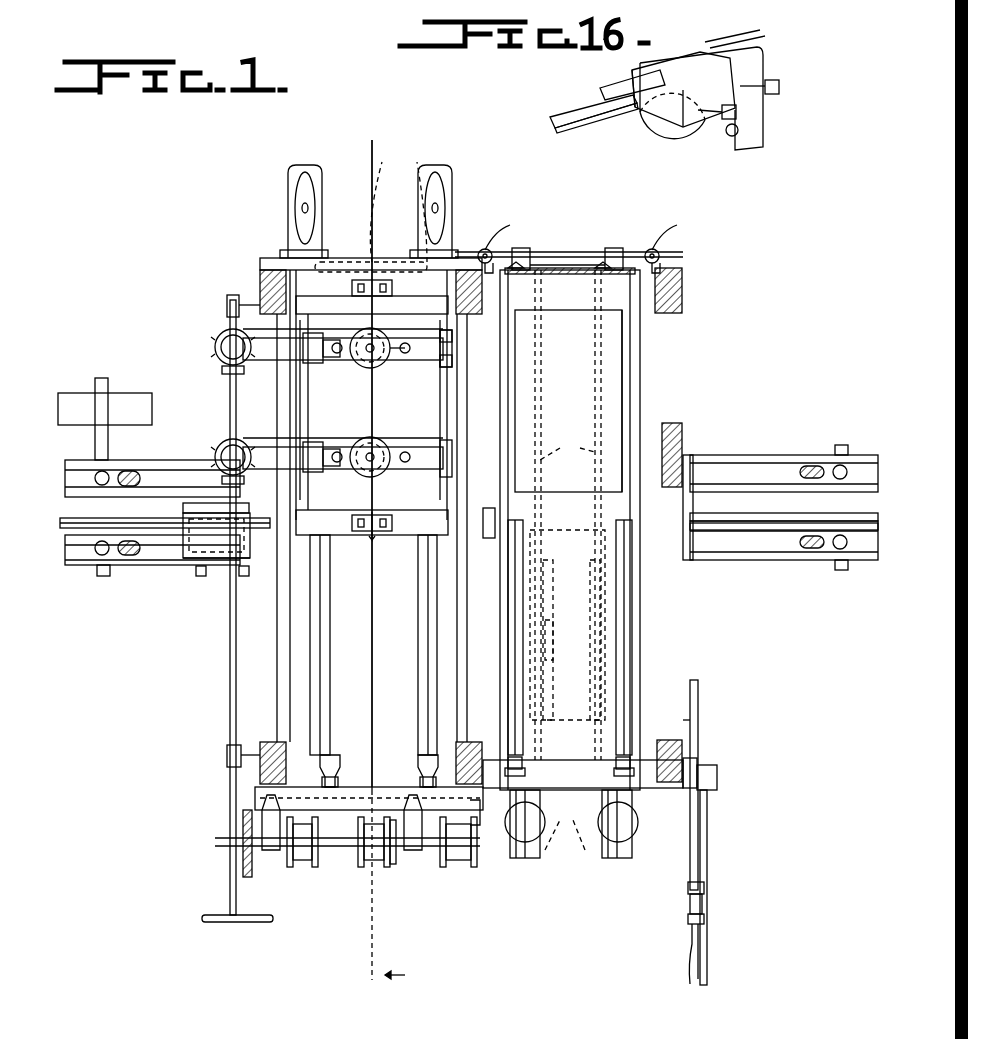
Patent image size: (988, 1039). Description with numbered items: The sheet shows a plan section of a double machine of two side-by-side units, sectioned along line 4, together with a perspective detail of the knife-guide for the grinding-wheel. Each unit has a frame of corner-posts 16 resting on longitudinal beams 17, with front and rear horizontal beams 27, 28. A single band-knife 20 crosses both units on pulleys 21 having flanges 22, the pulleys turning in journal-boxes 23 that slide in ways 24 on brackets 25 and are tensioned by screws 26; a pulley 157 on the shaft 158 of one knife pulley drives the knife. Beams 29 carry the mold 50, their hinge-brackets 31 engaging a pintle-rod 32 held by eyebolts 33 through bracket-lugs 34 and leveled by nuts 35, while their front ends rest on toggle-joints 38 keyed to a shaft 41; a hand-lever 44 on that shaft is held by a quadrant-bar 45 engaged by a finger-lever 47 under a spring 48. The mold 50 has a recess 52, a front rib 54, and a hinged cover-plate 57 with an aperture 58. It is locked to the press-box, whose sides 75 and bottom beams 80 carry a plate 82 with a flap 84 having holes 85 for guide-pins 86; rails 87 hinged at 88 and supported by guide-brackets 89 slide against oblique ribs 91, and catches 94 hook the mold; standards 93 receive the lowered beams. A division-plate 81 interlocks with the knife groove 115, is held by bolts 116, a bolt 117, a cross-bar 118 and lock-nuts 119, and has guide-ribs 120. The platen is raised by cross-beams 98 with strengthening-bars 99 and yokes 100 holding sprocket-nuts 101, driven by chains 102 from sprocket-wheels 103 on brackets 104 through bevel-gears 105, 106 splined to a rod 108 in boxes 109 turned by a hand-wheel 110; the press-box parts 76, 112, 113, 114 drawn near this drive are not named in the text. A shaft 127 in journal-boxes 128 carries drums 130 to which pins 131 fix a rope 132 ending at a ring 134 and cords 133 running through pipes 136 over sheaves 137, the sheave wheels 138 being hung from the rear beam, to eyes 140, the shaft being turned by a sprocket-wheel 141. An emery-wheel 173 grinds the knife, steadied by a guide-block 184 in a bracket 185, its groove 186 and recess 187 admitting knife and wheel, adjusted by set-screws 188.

In FIG. 1, the section line 4 is at (384, 562).
In FIG. 1, the corner-post 16 is at (260, 290).
In FIG. 1, the horizontal longitudinal beam 17 is at (698, 686).
In FIG. 1, the band-knife 20 is at (752, 470).
In FIG. 16, the band-knife 20 is at (550, 120).
In FIG. 1, the pulley 21 is at (165, 465).
In FIG. 1, the flange 22 is at (160, 567).
In FIG. 1, the journal-box 23 is at (95, 472).
In FIG. 1, the longitudinal way 24 is at (110, 470).
In FIG. 1, the bracket 25 is at (165, 462).
In FIG. 1, the screw 26 is at (128, 486).
In FIG. 1, the horizontal beam 27 is at (486, 811).
In FIG. 1, the horizontal beam 28 is at (380, 262).
In FIG. 1, the longitudinal beam 29 is at (518, 860).
In FIG. 1, the hinge-bracket 31 is at (525, 248).
In FIG. 1, the pintle-rod 32 is at (570, 262).
In FIG. 1, the eyebolt 33 is at (485, 249).
In FIG. 1, the bracket-lug 34 is at (492, 250).
In FIG. 1, the nut 35 is at (593, 211).
In FIG. 1, the toggle-joint 38 is at (575, 788).
In FIG. 1, the transverse shaft 41 is at (717, 780).
In FIG. 1, the hand-lever 44 is at (707, 870).
In FIG. 1, the notched quadrant-bar 45 is at (698, 722).
In FIG. 1, the finger-lever 47 is at (690, 965).
In FIG. 1, the spring 48 is at (690, 905).
In FIG. 1, the mold 50 is at (640, 390).
In FIG. 1, the rectangular recess 52 is at (568, 401).
In FIG. 1, the downwardly-projecting rib 54 is at (485, 540).
In FIG. 1, the cover-plate 57 is at (630, 360).
In FIG. 1, the central rectangular aperture 58 is at (622, 412).
In FIG. 1, the side 75 is at (308, 407).
In FIG. 1, the cross bar 76 is at (348, 300).
In FIG. 1, the beam 80 is at (343, 300).
In FIG. 1, the division-plate 81 is at (475, 663).
In FIG. 1, the plate 82 is at (580, 275).
In FIG. 1, the flap 84 is at (605, 248).
In FIG. 1, the hole 85 is at (564, 515).
In FIG. 1, the guide-pin 86 is at (625, 248).
In FIG. 1, the rail 87 is at (567, 447).
In FIG. 1, the hinge 88 is at (600, 272).
In FIG. 1, the guide-bracket 89 is at (595, 668).
In FIG. 1, the oblique rib 91 is at (522, 858).
In FIG. 1, the tubular standard 93 is at (566, 847).
In FIG. 1, the catch 94 is at (600, 536).
In FIG. 1, the cross-beam 98 is at (392, 360).
In FIG. 1, the steel strengthening-bar 99 is at (464, 428).
In FIG. 1, the steel yoke 100 is at (364, 402).
In FIG. 1, the sprocket-nut 101 is at (372, 368).
In FIG. 1, the sprocket-chain 102 is at (230, 380).
In FIG. 1, the sprocket-wheel 103 is at (222, 333).
In FIG. 1, the laterally-projecting bracket 104 is at (250, 366).
In FIG. 1, the bevel-gear 105 is at (215, 345).
In FIG. 1, the vertical bevel-gear 106 is at (222, 368).
In FIG. 1, the longitudinal rod 108 is at (230, 690).
In FIG. 1, the box 109 is at (227, 300).
In FIG. 1, the hand-wheel 110 is at (222, 920).
In FIG. 1, the box 112 is at (316, 402).
In FIG. 1, the block 113 is at (452, 352).
In FIG. 1, the block 114 is at (452, 376).
In FIG. 1, the rectangular groove 115 is at (830, 516).
In FIG. 16, the rectangular groove 115 is at (608, 120).
In FIG. 1, the bolt 116 is at (325, 772).
In FIG. 1, the bolt 117 is at (518, 766).
In FIG. 1, the cross-bar 118 is at (690, 790).
In FIG. 1, the lock-nut 119 is at (335, 775).
In FIG. 1, the guide-rib 120 is at (430, 636).
In FIG. 1, the shaft 127 is at (335, 848).
In FIG. 1, the journal-box 128 is at (270, 852).
In FIG. 1, the flanged drum 130 is at (302, 870).
In FIG. 1, the pin 131 is at (393, 866).
In FIG. 1, the under rope 132 is at (372, 630).
In FIG. 1, the upper cord 133 is at (295, 240).
In FIG. 1, the ring 134 is at (393, 524).
In FIG. 1, the pipe 136 is at (290, 672).
In FIG. 1, the sheave 137 is at (300, 205).
In FIG. 1, the pulley 138 is at (305, 172).
In FIG. 1, the eye 140 is at (374, 209).
In FIG. 1, the sprocket-wheel 141 is at (392, 290).
In FIG. 1, the pulley 157 is at (75, 395).
In FIG. 1, the shaft 158 is at (104, 380).
In FIG. 1, the emery-wheel 173 is at (183, 508).
In FIG. 16, the emery-wheel 173 is at (680, 138).
In FIG. 1, the guide-block 184 is at (204, 536).
In FIG. 16, the guide-block 184 is at (620, 82).
In FIG. 1, the grooved bracket 185 is at (220, 562).
In FIG. 16, the grooved bracket 185 is at (755, 65).
In FIG. 16, the groove 186 is at (600, 92).
In FIG. 16, the recess 187 is at (668, 60).
In FIG. 1, the set-screw 188 is at (224, 585).
In FIG. 16, the set-screw 188 is at (780, 87).